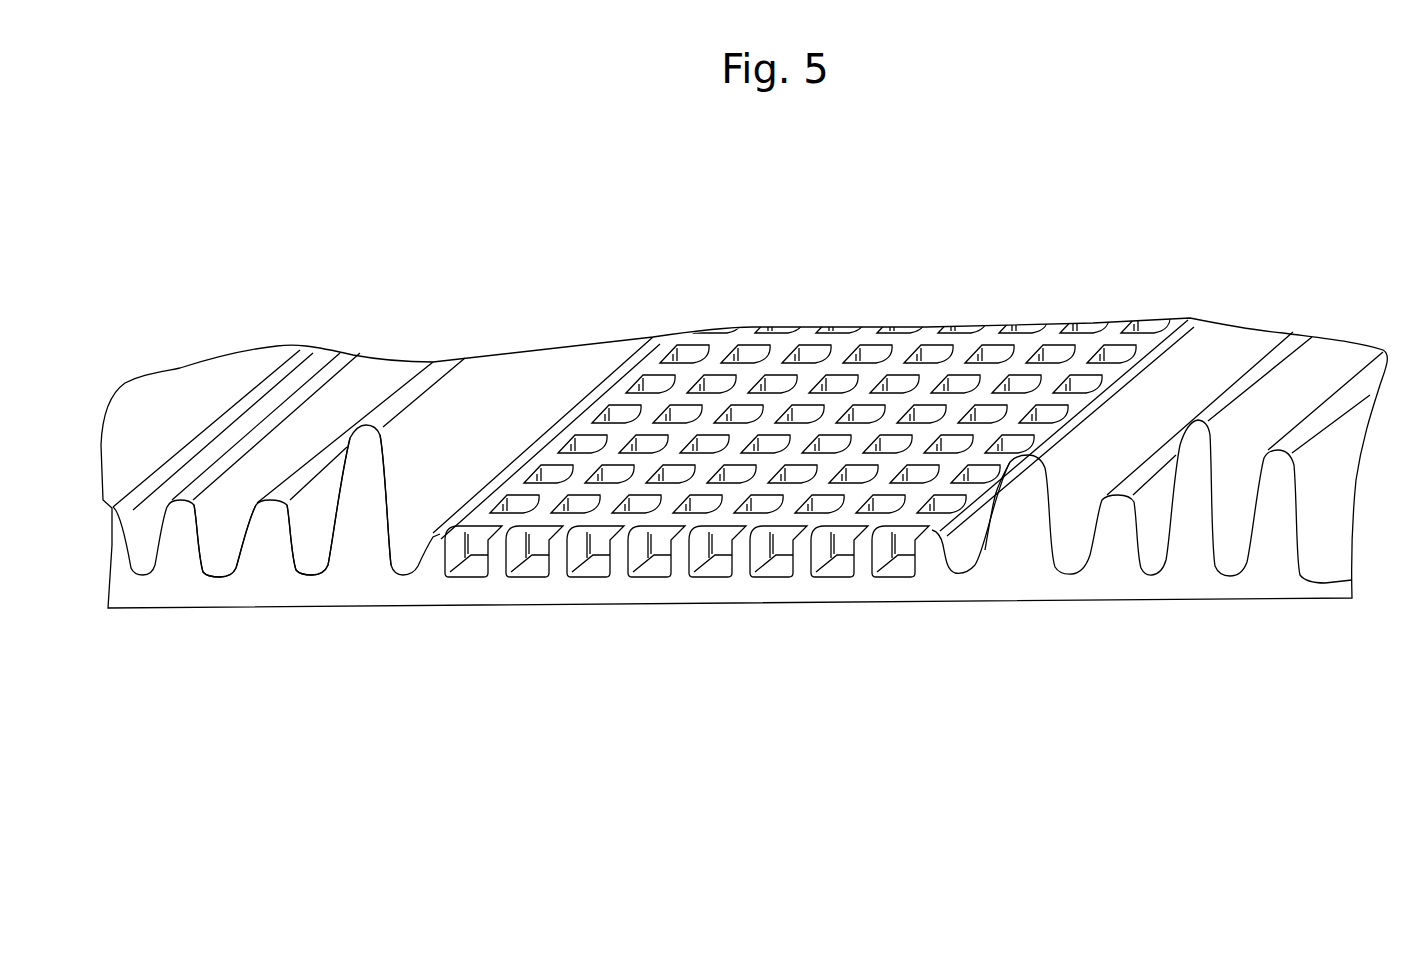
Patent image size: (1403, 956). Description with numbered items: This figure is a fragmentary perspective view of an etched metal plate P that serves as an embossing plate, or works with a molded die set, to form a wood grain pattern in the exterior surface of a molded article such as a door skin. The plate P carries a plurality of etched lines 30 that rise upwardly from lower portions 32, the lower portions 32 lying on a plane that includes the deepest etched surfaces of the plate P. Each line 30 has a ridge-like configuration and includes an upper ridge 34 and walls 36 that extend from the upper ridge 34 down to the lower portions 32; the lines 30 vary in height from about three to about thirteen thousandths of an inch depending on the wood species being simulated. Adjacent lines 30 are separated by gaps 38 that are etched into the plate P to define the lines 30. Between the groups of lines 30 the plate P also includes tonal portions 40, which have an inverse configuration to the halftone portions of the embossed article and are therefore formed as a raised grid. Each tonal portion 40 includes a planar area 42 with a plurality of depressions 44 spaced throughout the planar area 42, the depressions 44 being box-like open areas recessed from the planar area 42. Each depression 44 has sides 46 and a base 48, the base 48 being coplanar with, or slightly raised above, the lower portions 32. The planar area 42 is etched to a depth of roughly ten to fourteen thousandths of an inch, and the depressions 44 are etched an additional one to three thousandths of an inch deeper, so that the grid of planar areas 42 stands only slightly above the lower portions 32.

The etched metal plate P is at (1150, 166).
The etched lines 30 is at (276, 328).
The lower portions 32 is at (222, 575).
The upper ridge 34 is at (308, 351).
The walls 36 is at (396, 478).
The gaps 38 is at (388, 365).
The tonal portions 40 is at (920, 281).
The planar area 42 is at (997, 325).
The depressions 44 is at (700, 344).
The sides 46 is at (545, 558).
The base 48 is at (602, 562).